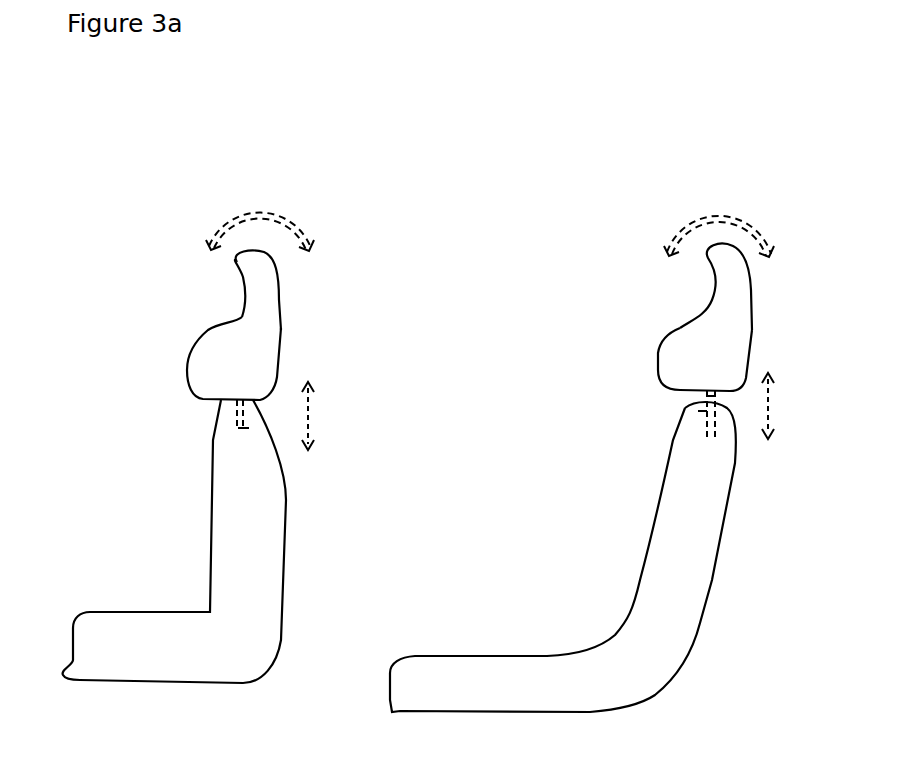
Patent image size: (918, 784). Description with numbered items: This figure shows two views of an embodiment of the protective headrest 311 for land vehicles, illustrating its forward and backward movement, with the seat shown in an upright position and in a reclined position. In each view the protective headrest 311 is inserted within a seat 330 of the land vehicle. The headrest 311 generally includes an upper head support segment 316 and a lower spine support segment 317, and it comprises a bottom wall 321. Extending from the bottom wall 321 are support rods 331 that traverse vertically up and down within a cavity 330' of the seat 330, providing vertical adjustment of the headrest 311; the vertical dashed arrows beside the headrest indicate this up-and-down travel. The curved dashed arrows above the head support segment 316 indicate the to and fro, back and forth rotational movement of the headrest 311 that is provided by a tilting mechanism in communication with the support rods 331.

The protective headrest 311 is at (163, 320).
The head support segment 316 is at (243, 284).
The spine support segment 317 is at (194, 350).
The bottom wall 321 is at (206, 403).
The seat 330 is at (399, 556).
The cavity 330' is at (529, 502).
The support rods 331 is at (246, 430).